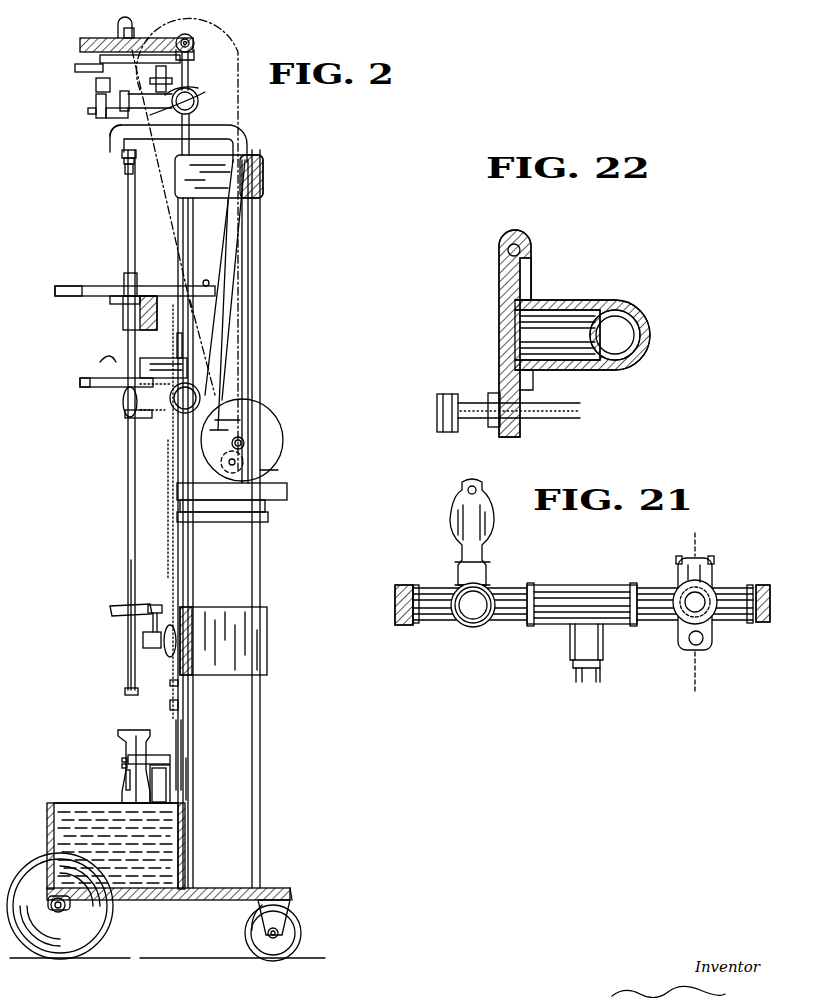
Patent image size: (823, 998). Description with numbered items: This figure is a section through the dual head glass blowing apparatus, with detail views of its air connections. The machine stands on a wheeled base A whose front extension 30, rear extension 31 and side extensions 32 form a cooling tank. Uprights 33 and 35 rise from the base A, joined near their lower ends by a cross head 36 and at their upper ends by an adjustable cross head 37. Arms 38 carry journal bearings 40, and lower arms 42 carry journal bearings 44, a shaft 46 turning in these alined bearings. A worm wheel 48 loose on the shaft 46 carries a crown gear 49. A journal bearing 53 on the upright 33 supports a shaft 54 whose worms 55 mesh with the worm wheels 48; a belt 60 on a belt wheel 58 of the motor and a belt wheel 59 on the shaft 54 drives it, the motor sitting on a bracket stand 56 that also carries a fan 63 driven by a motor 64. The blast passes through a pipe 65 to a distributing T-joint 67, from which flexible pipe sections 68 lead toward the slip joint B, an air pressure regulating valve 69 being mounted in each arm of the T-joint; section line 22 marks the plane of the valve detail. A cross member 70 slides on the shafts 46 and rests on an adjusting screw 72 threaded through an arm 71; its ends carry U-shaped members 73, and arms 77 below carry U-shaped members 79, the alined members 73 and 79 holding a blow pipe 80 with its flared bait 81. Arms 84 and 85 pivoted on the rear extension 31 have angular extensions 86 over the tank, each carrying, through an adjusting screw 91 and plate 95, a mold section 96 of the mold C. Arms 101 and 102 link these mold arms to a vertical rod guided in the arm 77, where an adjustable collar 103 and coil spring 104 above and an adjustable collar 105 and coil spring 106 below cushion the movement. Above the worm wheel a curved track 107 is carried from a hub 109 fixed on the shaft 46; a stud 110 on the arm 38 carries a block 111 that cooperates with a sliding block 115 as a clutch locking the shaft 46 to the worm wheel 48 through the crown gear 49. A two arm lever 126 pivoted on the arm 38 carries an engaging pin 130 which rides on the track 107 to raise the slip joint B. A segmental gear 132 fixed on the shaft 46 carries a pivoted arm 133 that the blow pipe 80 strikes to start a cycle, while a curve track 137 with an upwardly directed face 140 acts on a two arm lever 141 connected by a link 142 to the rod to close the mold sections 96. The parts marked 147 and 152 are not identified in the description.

In FIG. 2, the vertical front extension 30 is at (47, 830).
In FIG. 2, the vertical rear extension 31 is at (186, 840).
In FIG. 2, the vertical side extensions 32 is at (90, 803).
In FIG. 2, the upright 33 is at (196, 868).
In FIG. 2, the upright 35 is at (262, 762).
In FIG. 2, the cross head 36 is at (268, 656).
In FIG. 2, the cross head 37 is at (265, 178).
In FIG. 2, the arm 38 is at (199, 103).
In FIG. 2, the journal bearing 40 is at (112, 143).
In FIG. 2, the arm 42 is at (200, 394).
In FIG. 2, the journal bearing 44 is at (124, 405).
In FIG. 2, the shaft 46 is at (128, 236).
In FIG. 2, the worm wheel 48 is at (80, 47).
In FIG. 2, the crown gear 49 is at (100, 60).
In FIG. 2, the journal bearing 53 is at (195, 38).
In FIG. 2, the shaft 54 is at (196, 52).
In FIG. 2, the worm 55 is at (185, 34).
In FIG. 2, the bracket stand 56 is at (268, 520).
In FIG. 2, the belt wheel 58 is at (288, 482).
In FIG. 2, the belt wheel 59 is at (240, 70).
In FIG. 2, the belt 60 is at (240, 348).
In FIG. 2, the fan 63 is at (276, 438).
In FIG. 2, the motor 64 is at (244, 447).
In FIG. 2, the pipe 65 is at (228, 262).
In FIG. 21, the pipe 65 is at (602, 672).
In FIG. 2, the distributing T-joint 67 is at (108, 132).
In FIG. 22, the distributing T-joint 67 is at (650, 338).
In FIG. 21, the distributing T-joint 67 is at (565, 588).
In FIG. 2, the flexible pipe section 68 is at (118, 22).
In FIG. 21, the flexible pipe section 68 is at (403, 585).
In FIG. 2, the air pressure regulating valve 69 is at (95, 104).
In FIG. 22, the air pressure regulating valve 69 is at (499, 324).
In FIG. 21, the air pressure regulating valve 69 is at (490, 533).
In FIG. 2, the cross member 70 is at (157, 312).
In FIG. 2, the arm 71 is at (204, 335).
In FIG. 2, the adjusting screw 72 is at (128, 418).
In FIG. 2, the U-shaped member 73 is at (110, 304).
In FIG. 2, the arm 77 is at (160, 650).
In FIG. 2, the U-shaped member 79 is at (112, 616).
In FIG. 2, the blow pipe 80 is at (128, 560).
In FIG. 2, the flared bait 81 is at (126, 692).
In FIG. 2, the arm 84 is at (170, 772).
In FIG. 2, the arm 85 is at (158, 790).
In FIG. 2, the angular extension 86 is at (122, 760).
In FIG. 2, the adjusting screw 91 is at (140, 760).
In FIG. 2, the plate 95 is at (126, 780).
In FIG. 2, the mold section 96 is at (122, 766).
In FIG. 2, the arm 101 is at (186, 762).
In FIG. 2, the arm 102 is at (183, 752).
In FIG. 2, the adjustable collar 103 is at (166, 476).
In FIG. 2, the coil spring 104 is at (170, 575).
In FIG. 2, the adjustable collar 105 is at (170, 706).
In FIG. 2, the coil spring 106 is at (170, 685).
In FIG. 2, the curved track 107 is at (75, 69).
In FIG. 2, the hub 109 is at (136, 40).
In FIG. 2, the stud 110 is at (200, 93).
In FIG. 2, the block 111 is at (164, 84).
In FIG. 2, the block 115 is at (96, 86).
In FIG. 2, the two arm lever 126 is at (150, 160).
In FIG. 2, the engaging pin 130 is at (182, 90).
In FIG. 2, the segmental gear 132 is at (58, 298).
In FIG. 2, the arm 133 is at (204, 278).
In FIG. 2, the curve track 137 is at (86, 388).
In FIG. 2, the face 140 is at (108, 352).
In FIG. 2, the two arm lever 141 is at (170, 358).
In FIG. 2, the link 142 is at (170, 425).
In FIG. 2, the nut 147 is at (122, 156).
In FIG. 2, the sleeve 152 is at (126, 172).
In FIG. 21, the section line 22 is at (696, 615).
In FIG. 2, the wheeled base A is at (150, 900).
In FIG. 2, the slip joint B is at (124, 163).
In FIG. 2, the mold C is at (118, 733).